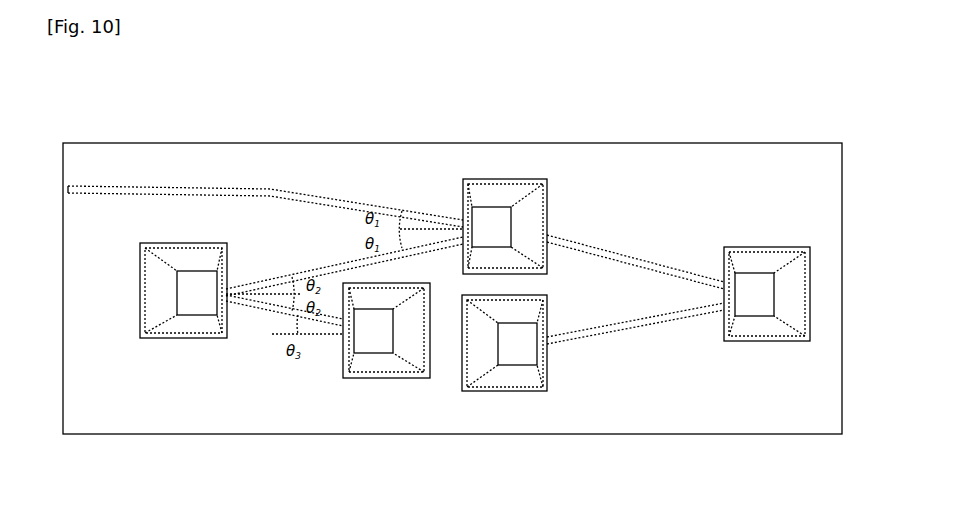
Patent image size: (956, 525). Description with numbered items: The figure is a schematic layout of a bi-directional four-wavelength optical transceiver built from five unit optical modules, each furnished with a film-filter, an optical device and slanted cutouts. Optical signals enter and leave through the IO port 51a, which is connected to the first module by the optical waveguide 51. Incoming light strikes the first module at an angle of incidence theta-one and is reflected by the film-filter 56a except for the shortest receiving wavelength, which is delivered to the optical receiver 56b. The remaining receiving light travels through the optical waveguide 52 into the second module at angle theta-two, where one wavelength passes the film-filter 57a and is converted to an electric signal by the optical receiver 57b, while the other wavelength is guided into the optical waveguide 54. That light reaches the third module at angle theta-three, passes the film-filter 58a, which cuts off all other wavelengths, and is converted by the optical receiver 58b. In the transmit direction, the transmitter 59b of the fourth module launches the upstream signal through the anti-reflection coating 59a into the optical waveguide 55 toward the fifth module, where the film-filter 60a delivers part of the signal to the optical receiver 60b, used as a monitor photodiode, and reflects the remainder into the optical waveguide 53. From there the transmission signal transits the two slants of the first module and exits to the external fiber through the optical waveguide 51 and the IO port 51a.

The optical waveguide 51 is at (148, 188).
The IO port 51a is at (68, 188).
The optical waveguide 52 is at (333, 265).
The optical waveguide 53 is at (618, 253).
The optical waveguide 54 is at (258, 308).
The optical waveguide 55 is at (633, 327).
The film-filter 56a is at (536, 179).
The optical receiver 56b is at (493, 179).
The film-filter 57a is at (150, 338).
The optical receiver 57b is at (188, 315).
The film-filter 58a is at (420, 378).
The optical receiver 58b is at (373, 353).
The anti-reflection coating 59a is at (532, 368).
The transmitter 59b is at (513, 358).
The film-filter 60a is at (787, 247).
The optical receiver 60b is at (733, 247).